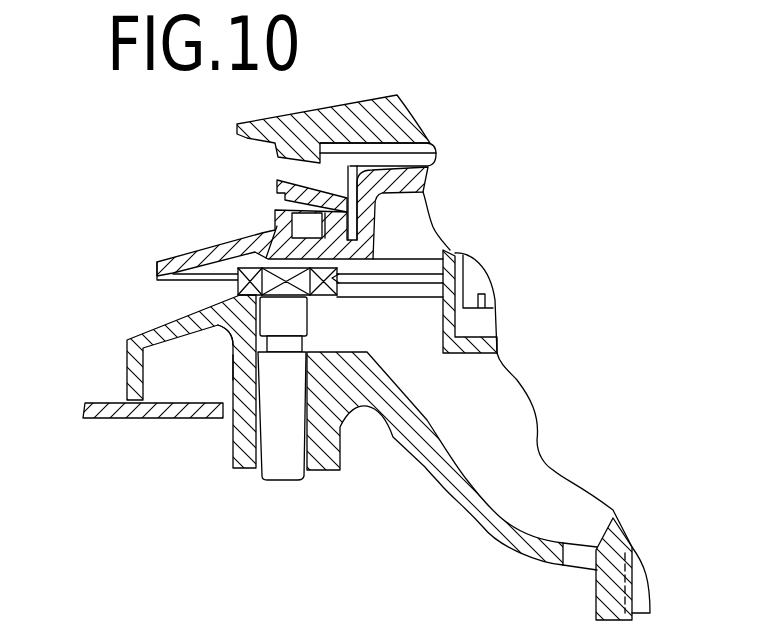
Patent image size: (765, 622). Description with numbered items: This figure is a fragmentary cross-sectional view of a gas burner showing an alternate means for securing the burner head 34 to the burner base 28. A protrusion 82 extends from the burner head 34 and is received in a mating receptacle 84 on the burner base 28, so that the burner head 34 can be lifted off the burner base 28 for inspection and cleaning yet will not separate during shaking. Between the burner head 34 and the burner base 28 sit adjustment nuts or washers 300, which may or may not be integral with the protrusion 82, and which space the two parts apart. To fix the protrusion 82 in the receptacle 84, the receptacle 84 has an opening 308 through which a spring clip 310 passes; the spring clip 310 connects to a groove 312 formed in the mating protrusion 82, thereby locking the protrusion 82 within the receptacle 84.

The burner head 34 is at (197, 210).
The adjustment nuts or washers 300 is at (240, 293).
The burner base 28 is at (132, 365).
The opening 308 is at (231, 349).
The spring clip 310 is at (231, 368).
The groove 312 is at (305, 347).
The protrusion 82 is at (318, 421).
The receptacle 84 is at (340, 426).